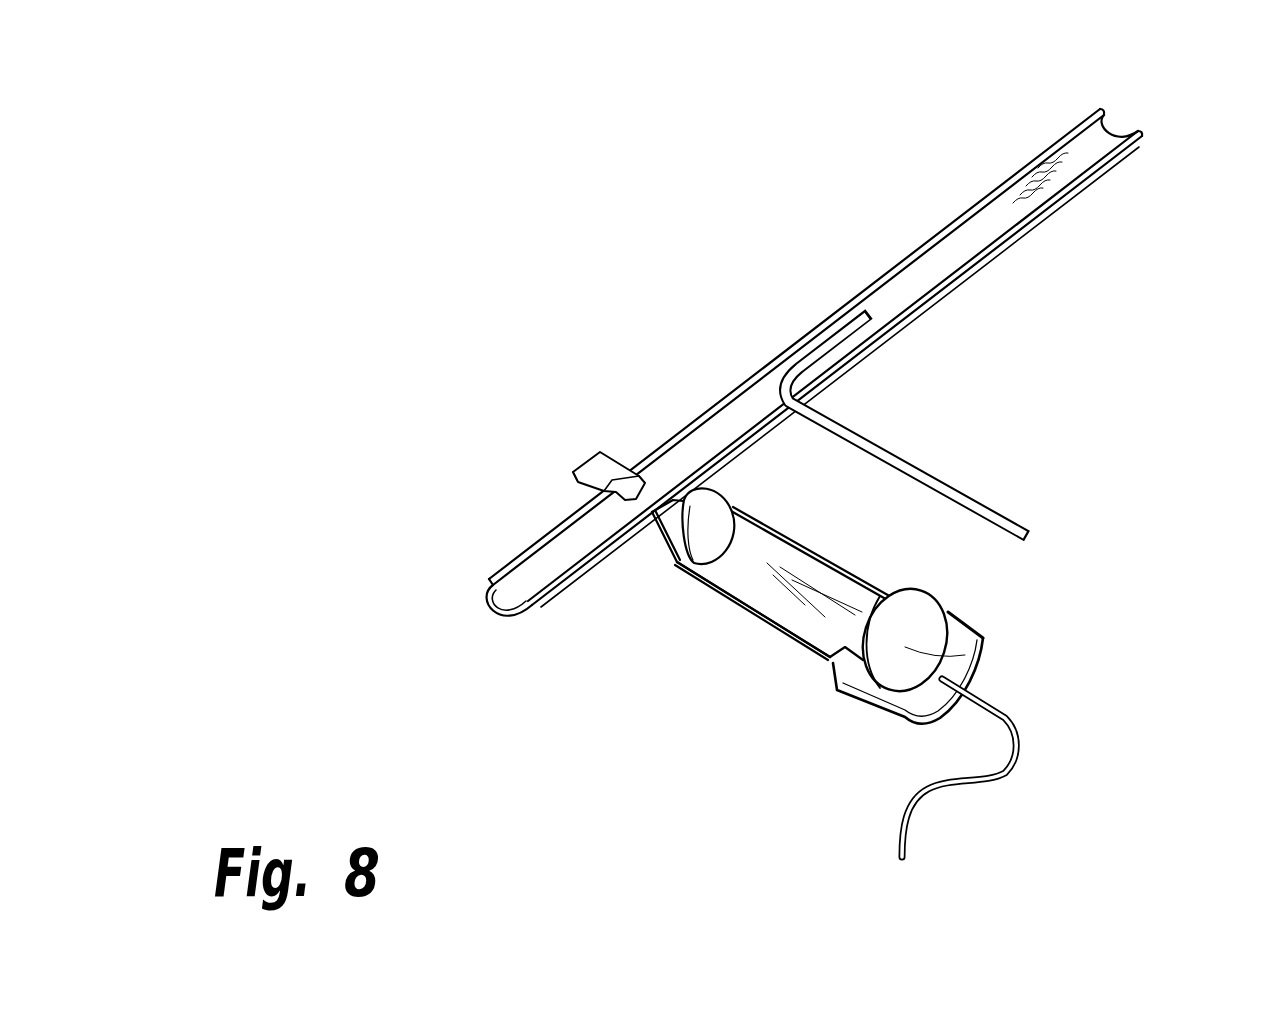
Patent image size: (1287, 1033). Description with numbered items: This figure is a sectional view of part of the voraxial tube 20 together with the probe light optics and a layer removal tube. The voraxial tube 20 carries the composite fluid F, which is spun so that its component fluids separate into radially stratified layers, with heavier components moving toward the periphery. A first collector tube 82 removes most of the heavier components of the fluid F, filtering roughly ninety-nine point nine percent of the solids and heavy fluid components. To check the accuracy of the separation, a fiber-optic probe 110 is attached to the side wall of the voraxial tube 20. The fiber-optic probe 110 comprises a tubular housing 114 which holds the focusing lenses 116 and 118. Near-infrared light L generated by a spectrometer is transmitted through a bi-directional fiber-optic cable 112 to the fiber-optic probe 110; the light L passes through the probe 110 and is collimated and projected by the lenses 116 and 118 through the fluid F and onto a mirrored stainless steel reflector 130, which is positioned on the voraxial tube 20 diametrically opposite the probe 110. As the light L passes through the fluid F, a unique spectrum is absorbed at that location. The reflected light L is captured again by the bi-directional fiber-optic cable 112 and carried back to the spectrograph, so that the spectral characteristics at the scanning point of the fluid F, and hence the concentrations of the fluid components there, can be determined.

The voraxial tube 20 is at (965, 211).
The first collector tube 82 is at (928, 482).
The mirrored stainless steel reflector 130 is at (613, 472).
The fiber-optic probe 110 is at (808, 627).
The tubular housing 114 is at (740, 593).
The focusing lens 118 is at (698, 537).
The focusing lens 116 is at (993, 657).
The bi-directional fiber-optic cable 112 is at (1003, 717).
The fluid F is at (1042, 184).
The near-infrared light L is at (835, 590).